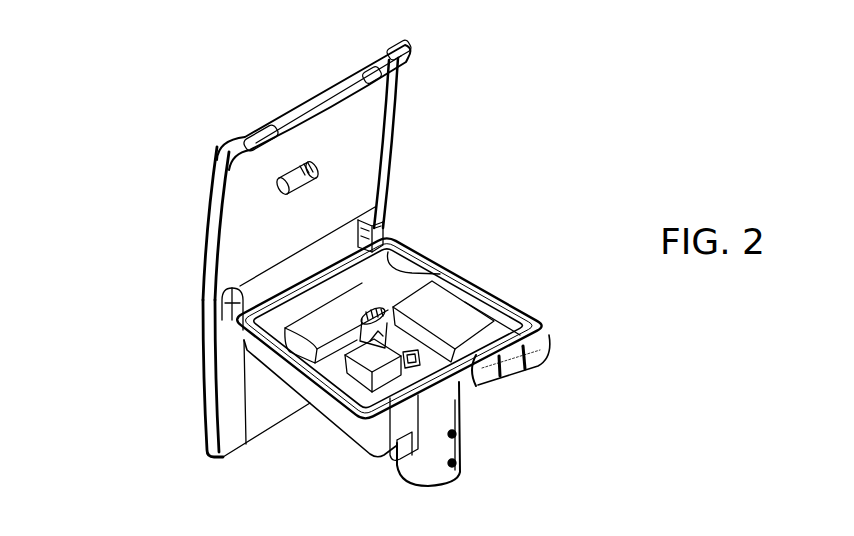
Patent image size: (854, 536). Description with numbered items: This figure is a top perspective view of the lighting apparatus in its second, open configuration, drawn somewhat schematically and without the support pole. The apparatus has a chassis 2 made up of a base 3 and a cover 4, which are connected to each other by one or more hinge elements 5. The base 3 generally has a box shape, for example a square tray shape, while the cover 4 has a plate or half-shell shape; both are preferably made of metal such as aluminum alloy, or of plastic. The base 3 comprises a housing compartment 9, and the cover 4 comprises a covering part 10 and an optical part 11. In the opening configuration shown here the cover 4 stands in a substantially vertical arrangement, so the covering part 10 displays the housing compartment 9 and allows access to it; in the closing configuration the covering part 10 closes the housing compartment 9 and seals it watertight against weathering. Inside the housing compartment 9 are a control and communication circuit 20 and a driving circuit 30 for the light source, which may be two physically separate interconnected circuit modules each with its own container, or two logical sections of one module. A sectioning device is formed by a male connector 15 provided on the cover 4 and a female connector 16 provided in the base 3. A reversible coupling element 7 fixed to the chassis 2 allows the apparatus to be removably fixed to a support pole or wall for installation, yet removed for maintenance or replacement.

The chassis 2 is at (86, 129).
The base 3 is at (548, 330).
The cover 4 is at (333, 82).
The hinge elements 5 is at (252, 290).
The reversible coupling element 7 is at (452, 408).
The housing compartment 9 is at (470, 320).
The covering part 10 is at (212, 203).
The optical part 11 is at (213, 383).
The male connector 15 is at (318, 183).
The female connector 16 is at (443, 274).
The control and communication circuit 20 is at (497, 318).
The driving circuit 30 is at (388, 300).